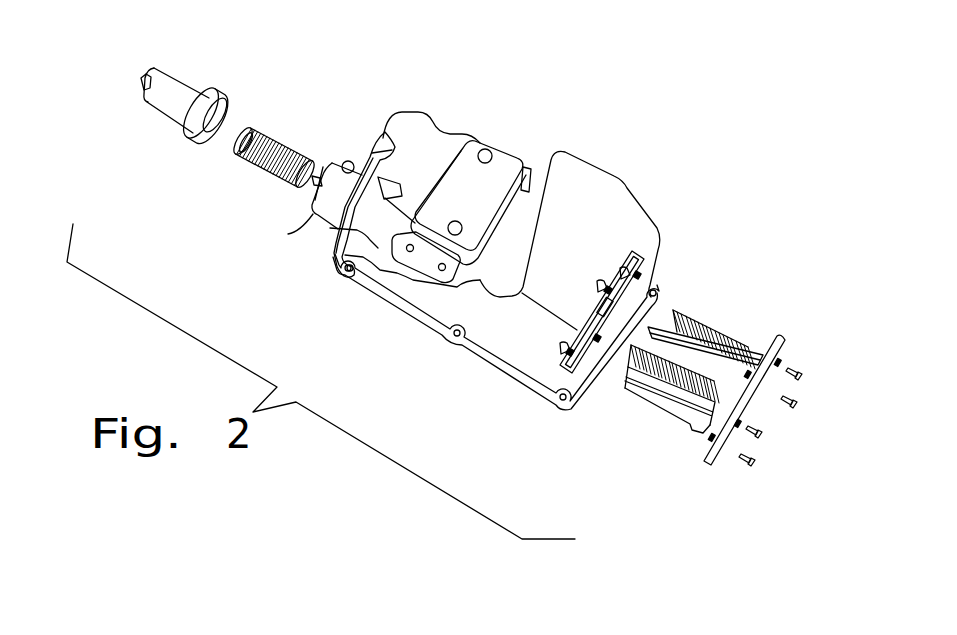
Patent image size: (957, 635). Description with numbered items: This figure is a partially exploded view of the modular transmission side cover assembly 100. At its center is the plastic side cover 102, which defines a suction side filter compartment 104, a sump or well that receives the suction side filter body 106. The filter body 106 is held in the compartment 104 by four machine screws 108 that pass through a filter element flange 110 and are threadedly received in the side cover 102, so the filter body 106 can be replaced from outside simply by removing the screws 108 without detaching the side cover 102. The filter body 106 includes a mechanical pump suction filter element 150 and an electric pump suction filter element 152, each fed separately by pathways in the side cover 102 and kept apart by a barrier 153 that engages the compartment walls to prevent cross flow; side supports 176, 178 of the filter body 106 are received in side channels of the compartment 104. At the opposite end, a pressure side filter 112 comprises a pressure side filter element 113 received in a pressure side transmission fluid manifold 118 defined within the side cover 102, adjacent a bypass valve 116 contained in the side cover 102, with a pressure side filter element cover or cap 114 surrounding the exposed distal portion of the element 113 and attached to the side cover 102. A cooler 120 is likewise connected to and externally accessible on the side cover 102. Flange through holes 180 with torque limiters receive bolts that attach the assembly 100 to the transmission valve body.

The modular transmission side cover assembly 100 is at (357, 327).
The side cover 102 is at (633, 190).
The suction side filter compartment 104 is at (646, 292).
The suction side filter body 106 is at (678, 437).
The machine screws 108 is at (798, 404).
The filter element flange 110 is at (784, 343).
The pressure side filter 112 is at (187, 172).
The pressure side filter element 113 is at (268, 129).
The pressure side filter element cover or cap 114 is at (177, 77).
The bypass valve 116 is at (336, 163).
The pressure side transmission fluid manifold 118 is at (321, 219).
The cooler 120 is at (496, 168).
The mechanical pump suction filter element 150 is at (637, 395).
The electric pump suction filter element 152 is at (690, 318).
The barrier 153 is at (731, 340).
The side support 176 is at (727, 330).
The side support 178 is at (663, 405).
The flange through holes 180 is at (344, 273).